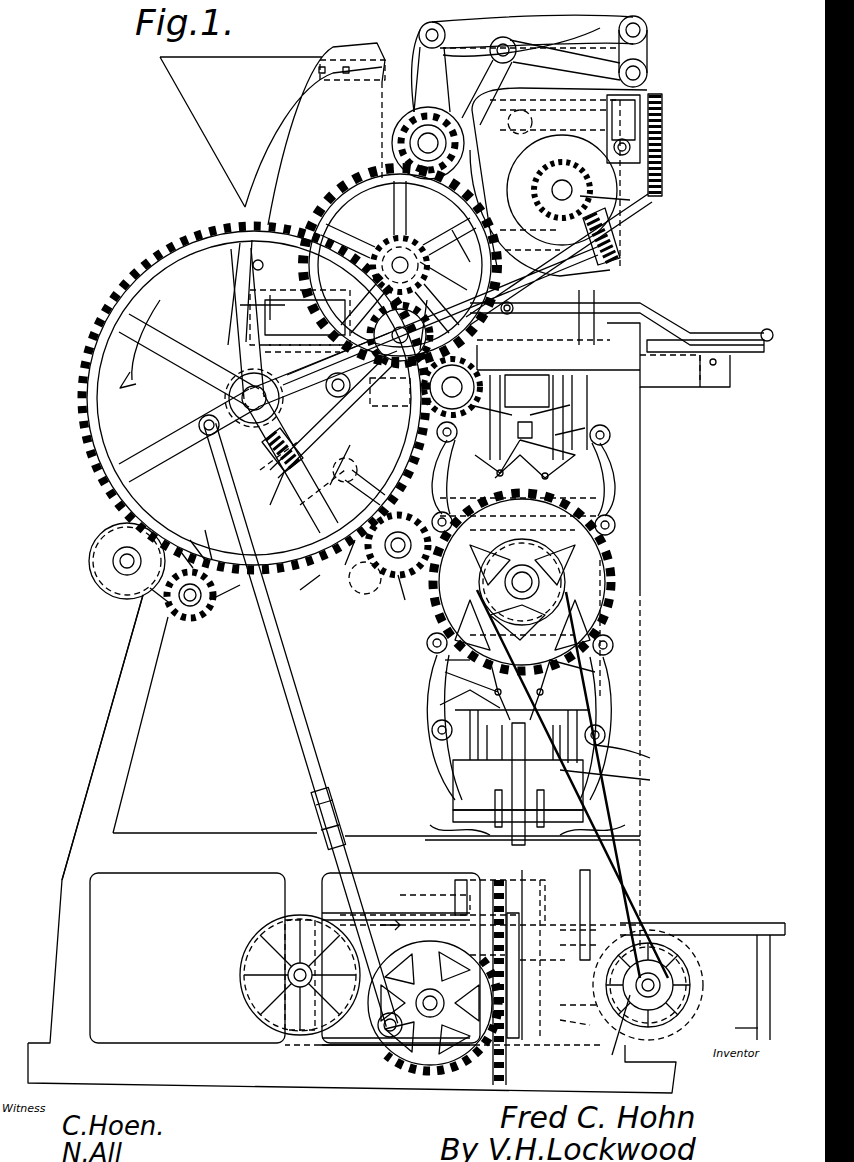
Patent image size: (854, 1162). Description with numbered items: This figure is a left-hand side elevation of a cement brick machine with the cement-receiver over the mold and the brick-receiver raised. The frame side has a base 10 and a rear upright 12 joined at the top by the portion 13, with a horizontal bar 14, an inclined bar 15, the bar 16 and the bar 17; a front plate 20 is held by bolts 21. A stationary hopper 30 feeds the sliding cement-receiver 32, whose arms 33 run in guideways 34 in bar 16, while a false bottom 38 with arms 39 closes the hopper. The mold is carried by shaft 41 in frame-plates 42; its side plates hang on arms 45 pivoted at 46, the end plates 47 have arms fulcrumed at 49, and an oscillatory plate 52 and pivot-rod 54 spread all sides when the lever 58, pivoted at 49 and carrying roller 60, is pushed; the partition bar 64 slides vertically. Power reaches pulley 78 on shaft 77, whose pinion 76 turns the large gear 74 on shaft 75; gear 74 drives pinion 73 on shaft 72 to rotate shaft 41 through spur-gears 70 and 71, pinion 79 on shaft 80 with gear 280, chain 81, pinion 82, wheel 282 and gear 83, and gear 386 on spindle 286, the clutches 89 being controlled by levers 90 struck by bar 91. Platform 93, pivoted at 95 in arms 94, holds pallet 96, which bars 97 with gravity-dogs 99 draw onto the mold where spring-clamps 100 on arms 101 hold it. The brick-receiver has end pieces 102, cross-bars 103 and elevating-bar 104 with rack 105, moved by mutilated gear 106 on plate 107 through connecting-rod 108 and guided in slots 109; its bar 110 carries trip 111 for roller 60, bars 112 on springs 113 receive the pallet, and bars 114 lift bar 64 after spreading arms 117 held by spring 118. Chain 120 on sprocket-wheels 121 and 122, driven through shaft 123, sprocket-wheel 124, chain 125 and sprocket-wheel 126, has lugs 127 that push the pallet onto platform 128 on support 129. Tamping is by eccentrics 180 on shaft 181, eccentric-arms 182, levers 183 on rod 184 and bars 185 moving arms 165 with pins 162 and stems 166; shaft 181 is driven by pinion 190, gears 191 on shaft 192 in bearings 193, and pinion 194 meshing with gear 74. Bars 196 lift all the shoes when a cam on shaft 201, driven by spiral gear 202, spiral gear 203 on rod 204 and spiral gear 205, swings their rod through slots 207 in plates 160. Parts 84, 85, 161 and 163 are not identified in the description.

The base 10 is at (352, 844).
The rear upright 12 is at (125, 735).
The connecting portion 13 is at (365, 60).
The horizontal bar 14 is at (170, 873).
The inclined bar 15 is at (327, 577).
The frame-bar 16 is at (603, 355).
The inclined substantially vertical bar 17 is at (390, 406).
The plate 20 is at (662, 187).
The bolts 21 is at (640, 193).
The hopper 30 is at (272, 134).
The cement-receiver 32 is at (507, 315).
The arms 33 is at (612, 280).
The horizontal guideways 34 is at (302, 355).
The false bottom 38 is at (300, 317).
The arm 39 is at (251, 307).
The horizontal shaft 41 is at (512, 582).
The frame-plates 42 is at (645, 693).
The side arms 45 is at (612, 500).
The pivots 46 is at (612, 435).
The end plates 47 is at (425, 797).
The fulcrum 49 is at (590, 440).
The oscillatory plate 52 is at (520, 574).
The pivot-rod 54 is at (425, 640).
The lever 58 is at (634, 756).
The antifriction roller 60 is at (617, 780).
The partition bar 64 is at (532, 425).
The spur-gear 70 is at (612, 580).
The spur-gear 71 is at (410, 592).
The shaft 72 is at (408, 520).
The pinion 73 is at (366, 586).
The large gear 74 is at (110, 470).
The shaft 75 is at (243, 400).
The pinion 76 is at (90, 585).
The shaft 77 is at (110, 560).
The pulley 78 is at (110, 595).
The pinion 79 is at (192, 618).
The shaft 80 is at (185, 598).
The sprocket-chain 81 is at (285, 545).
The pinion 82 is at (322, 487).
The gear 83 is at (332, 412).
The pivot 84 is at (363, 394).
The roller 85 is at (359, 494).
The sliding clutch mechanisms 89 is at (185, 539).
The lever 90 is at (211, 525).
The bar 91 is at (252, 266).
The platform 93 is at (735, 380).
The arms 94 is at (675, 385).
The pivot points 95 is at (712, 367).
The pallet 96 is at (690, 345).
The bars 97 is at (655, 320).
The gravity-dogs 99 is at (760, 343).
The spring-clamps 100 is at (450, 825).
The arms 101 is at (560, 862).
The end pieces 102 is at (578, 1012).
The cross-bars 103 is at (493, 957).
The elevating-bar 104 is at (520, 1025).
The rack 105 is at (508, 1065).
The mutilated gear 106 is at (410, 1050).
The plate 107 is at (435, 898).
The connecting-rod 108 is at (300, 720).
The vertical slots 109 is at (484, 926).
The bar 110 is at (490, 955).
The trip projection 111 is at (480, 858).
The pallet-receiving bars 112 is at (569, 935).
The springs 113 is at (388, 932).
The bars 114 is at (453, 775).
The arms 117 is at (540, 420).
The spring 118 is at (440, 665).
The sprocket-chain 120 is at (270, 928).
The sprocket-wheel 121 is at (262, 952).
The sprocket-wheel 122 is at (690, 963).
The shaft 123 is at (650, 990).
The sprocket-wheel 124 is at (616, 1035).
The chain 125 is at (640, 895).
The sprocket-wheel 126 is at (522, 582).
The lugs 127 is at (720, 1005).
The platform 128 is at (710, 925).
The support 129 is at (736, 1028).
The inwardly-extending plates 160 is at (622, 215).
The slide 161 is at (640, 160).
The pins 162 is at (625, 140).
The pin 163 is at (630, 150).
The arms 165 is at (565, 60).
The vertical stems 166 is at (530, 175).
The eccentrics 180 is at (408, 118).
The shaft 181 is at (416, 143).
The eccentric-arm 182 is at (492, 60).
The lever 183 is at (548, 60).
The rod 184 is at (505, 45).
The bars 185 is at (648, 50).
The pinion 190 is at (458, 130).
The gears 191 is at (340, 198).
The shaft 192 is at (398, 260).
The bearings 193 is at (399, 335).
The pinion 194 is at (449, 244).
The bars 196 is at (568, 182).
The shaft 201 is at (632, 222).
The spiral gear 202 is at (505, 157).
The spiral gear 203 is at (618, 255).
The rod 204 is at (443, 281).
The spiral gear 205 is at (271, 450).
The slots 207 is at (600, 170).
The gear 280 is at (210, 620).
The wheel 282 is at (286, 469).
The spindle 286 is at (430, 360).
The gear 386 is at (462, 375).